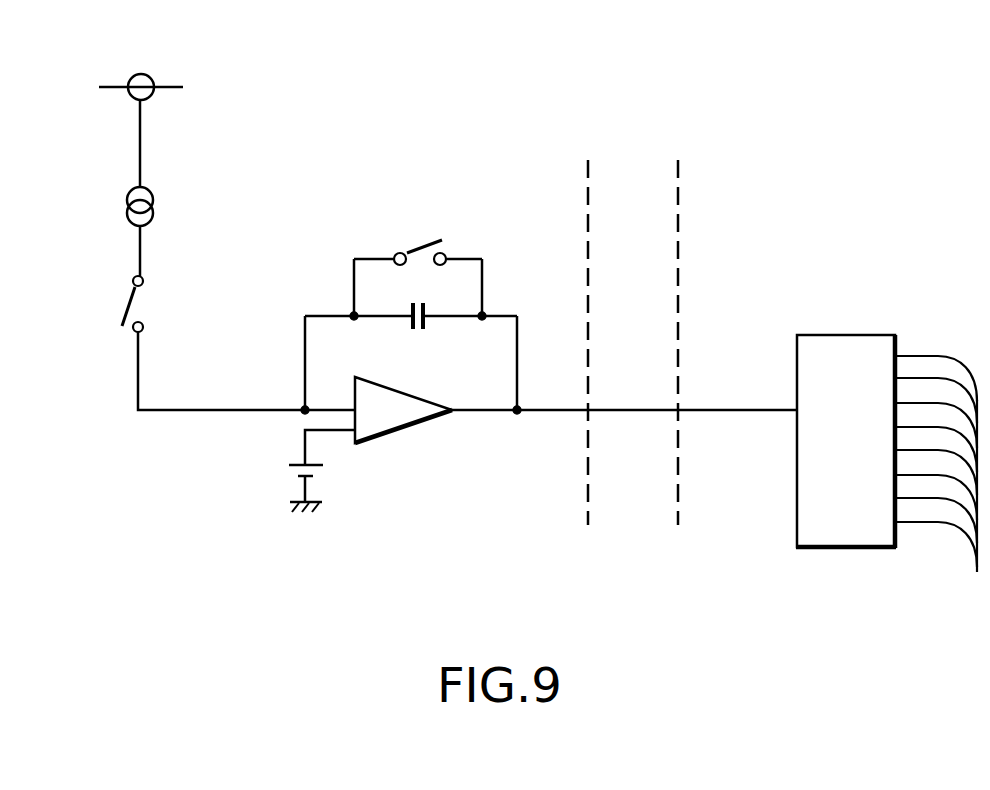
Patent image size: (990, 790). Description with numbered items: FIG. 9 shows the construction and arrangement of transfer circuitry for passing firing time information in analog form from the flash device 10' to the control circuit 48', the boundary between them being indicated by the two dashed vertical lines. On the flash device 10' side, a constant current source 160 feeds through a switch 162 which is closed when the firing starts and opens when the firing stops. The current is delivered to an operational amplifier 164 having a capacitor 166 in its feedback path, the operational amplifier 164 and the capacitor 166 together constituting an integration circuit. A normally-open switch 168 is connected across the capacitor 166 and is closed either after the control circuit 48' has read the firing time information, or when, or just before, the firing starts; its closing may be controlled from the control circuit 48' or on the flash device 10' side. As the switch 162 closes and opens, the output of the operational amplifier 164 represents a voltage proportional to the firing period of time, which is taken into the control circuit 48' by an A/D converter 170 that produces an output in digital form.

The constant current source 160 is at (153, 214).
The switch 162 is at (140, 300).
The operational amplifier 164 is at (405, 418).
The capacitor 166 is at (417, 331).
The normally-open switch 168 is at (417, 243).
The A/D converter 170 is at (840, 342).
The flash device 10' is at (602, 364).
The control circuit 48' is at (673, 371).